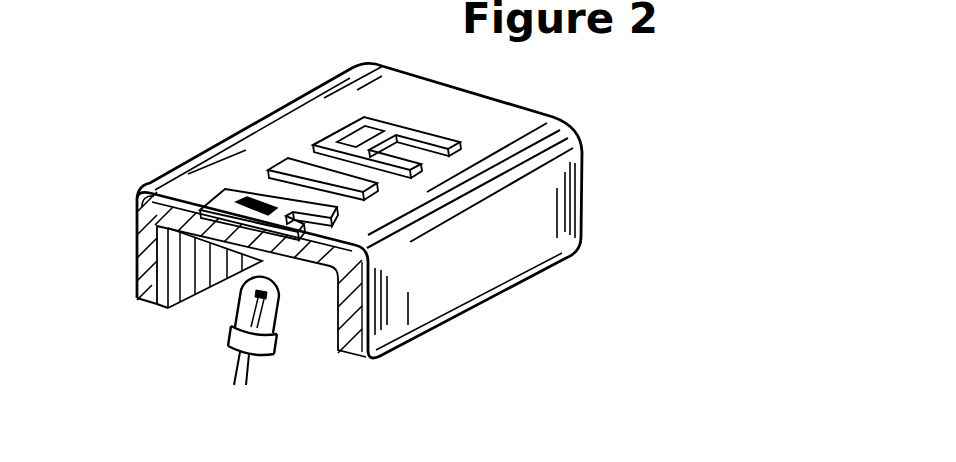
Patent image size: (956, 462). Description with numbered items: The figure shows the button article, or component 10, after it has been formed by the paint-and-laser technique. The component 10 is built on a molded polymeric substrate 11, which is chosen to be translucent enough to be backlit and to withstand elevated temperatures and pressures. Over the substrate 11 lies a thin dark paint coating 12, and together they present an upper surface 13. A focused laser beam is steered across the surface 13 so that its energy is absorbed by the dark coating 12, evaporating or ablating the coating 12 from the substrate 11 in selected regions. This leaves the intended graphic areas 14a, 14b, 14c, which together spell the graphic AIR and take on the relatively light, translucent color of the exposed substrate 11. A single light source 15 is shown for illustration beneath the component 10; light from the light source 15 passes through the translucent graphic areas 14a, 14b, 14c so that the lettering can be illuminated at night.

The component 10 is at (600, 162).
The substrate 11 is at (158, 270).
The coating 12 is at (133, 205).
The upper surface 13 is at (470, 124).
The graphic area 14a is at (218, 203).
The graphic area 14b is at (280, 165).
The graphic area 14c is at (330, 145).
The light source 15 is at (227, 314).